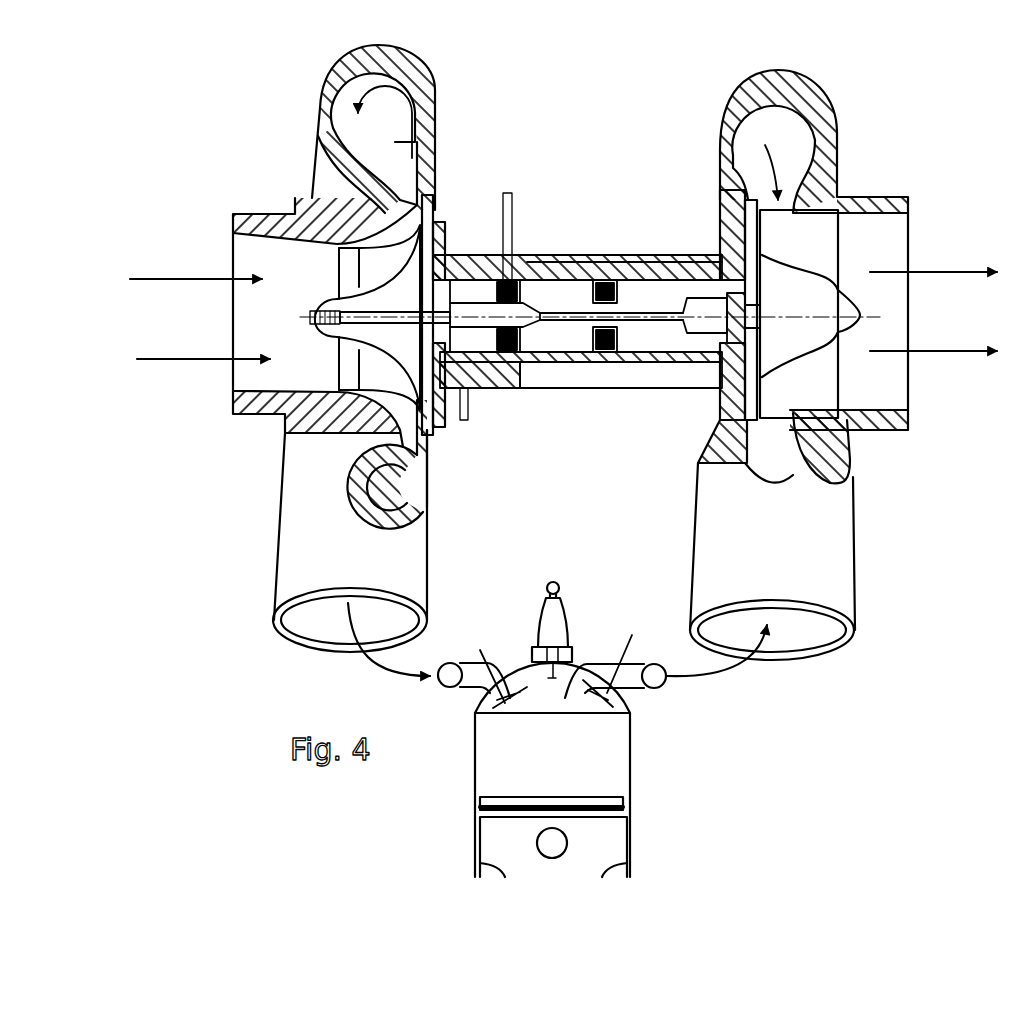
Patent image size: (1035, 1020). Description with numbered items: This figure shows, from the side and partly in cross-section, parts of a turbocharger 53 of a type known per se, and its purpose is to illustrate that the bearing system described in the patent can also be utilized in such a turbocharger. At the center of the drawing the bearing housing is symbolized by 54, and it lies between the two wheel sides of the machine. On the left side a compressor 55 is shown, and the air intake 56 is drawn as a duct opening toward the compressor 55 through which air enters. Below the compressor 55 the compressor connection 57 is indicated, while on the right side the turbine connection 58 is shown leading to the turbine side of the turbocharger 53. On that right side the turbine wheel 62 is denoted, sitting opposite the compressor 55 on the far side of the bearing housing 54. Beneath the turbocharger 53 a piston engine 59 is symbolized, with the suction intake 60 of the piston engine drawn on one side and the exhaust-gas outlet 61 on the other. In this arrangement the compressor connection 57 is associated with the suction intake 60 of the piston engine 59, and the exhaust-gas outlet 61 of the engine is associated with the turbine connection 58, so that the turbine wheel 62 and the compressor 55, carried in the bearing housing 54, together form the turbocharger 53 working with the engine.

The turbocharger 53 is at (893, 135).
The bearing housing 54 is at (598, 245).
The compressor 55 is at (366, 362).
The air intake 56 is at (220, 316).
The compressor connection 57 is at (250, 575).
The turbine connection 58 is at (820, 553).
The piston engine 59 is at (640, 766).
The suction intake 60 is at (445, 694).
The exhaust-gas outlet 61 is at (674, 687).
The turbine wheel 62 is at (824, 271).